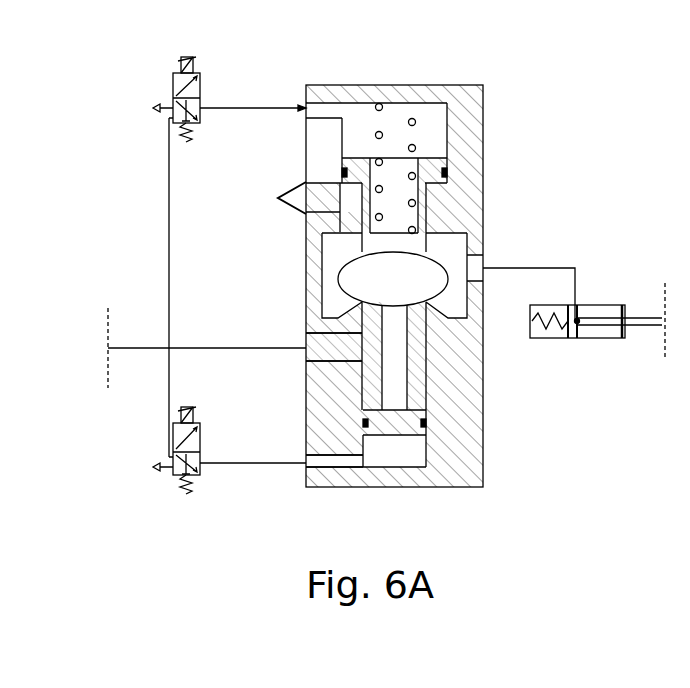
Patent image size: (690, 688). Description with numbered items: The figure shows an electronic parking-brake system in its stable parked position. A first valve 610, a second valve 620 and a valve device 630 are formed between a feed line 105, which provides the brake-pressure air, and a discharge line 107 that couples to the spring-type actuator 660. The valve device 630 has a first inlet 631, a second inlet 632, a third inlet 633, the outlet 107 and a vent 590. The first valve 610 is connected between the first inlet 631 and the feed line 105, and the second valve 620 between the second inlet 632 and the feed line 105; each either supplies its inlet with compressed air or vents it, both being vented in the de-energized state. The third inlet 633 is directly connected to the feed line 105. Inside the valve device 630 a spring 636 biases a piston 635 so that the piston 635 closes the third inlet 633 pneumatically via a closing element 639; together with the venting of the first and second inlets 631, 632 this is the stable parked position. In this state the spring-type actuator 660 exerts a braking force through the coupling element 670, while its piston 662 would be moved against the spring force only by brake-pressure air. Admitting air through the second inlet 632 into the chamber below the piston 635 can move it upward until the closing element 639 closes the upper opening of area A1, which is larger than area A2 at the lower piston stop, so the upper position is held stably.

The valve device 630 is at (476, 118).
The first inlet 631 is at (303, 108).
The spring 636 is at (379, 130).
The closing element 639 is at (428, 278).
The piston 635 is at (400, 428).
The vent 590 is at (287, 186).
The third inlet 633 is at (306, 340).
The second inlet 632 is at (306, 470).
The feed line 105 is at (138, 346).
The first valve 610 is at (156, 90).
The second valve 620 is at (156, 448).
The discharge line 107 is at (528, 268).
The spring-type actuator 660 is at (590, 338).
The piston 662 is at (566, 314).
The coupling element 670 is at (657, 310).
The cross-sectional area of upper opening A1 is at (447, 239).
The cross-sectional area at lower piston stop A2 is at (417, 310).